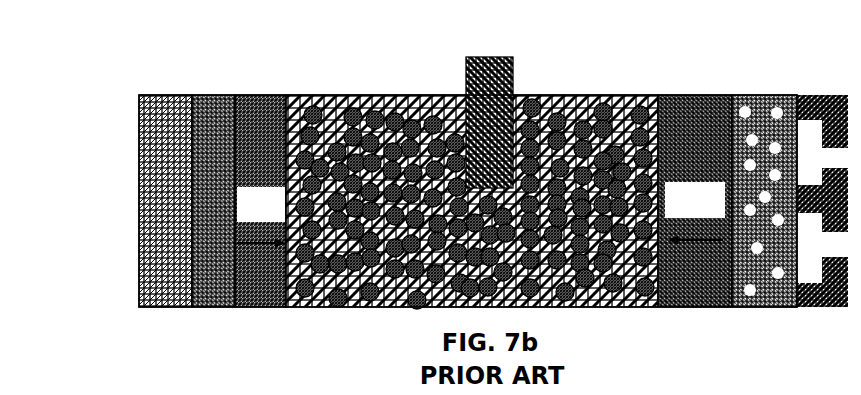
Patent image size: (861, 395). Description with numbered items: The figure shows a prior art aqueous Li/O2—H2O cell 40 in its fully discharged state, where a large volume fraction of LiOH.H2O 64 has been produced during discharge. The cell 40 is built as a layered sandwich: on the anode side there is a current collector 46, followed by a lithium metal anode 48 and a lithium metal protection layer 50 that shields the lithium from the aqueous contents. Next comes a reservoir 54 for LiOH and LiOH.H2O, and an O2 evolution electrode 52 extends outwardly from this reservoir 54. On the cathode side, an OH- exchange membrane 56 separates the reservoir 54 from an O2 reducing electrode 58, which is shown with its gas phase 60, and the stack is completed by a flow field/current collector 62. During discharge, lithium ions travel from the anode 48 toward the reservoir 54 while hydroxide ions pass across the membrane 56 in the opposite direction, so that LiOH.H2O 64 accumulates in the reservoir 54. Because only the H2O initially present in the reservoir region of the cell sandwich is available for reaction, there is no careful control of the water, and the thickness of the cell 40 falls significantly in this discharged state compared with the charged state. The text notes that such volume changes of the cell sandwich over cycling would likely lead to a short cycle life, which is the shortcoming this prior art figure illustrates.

The aqueous Li/O2—H2O cell 40 is at (339, 31).
The current collector 46 is at (145, 95).
The lithium metal anode 48 is at (212, 95).
The lithium metal protection layer 50 is at (273, 95).
The O2 evolution electrode 52 is at (465, 57).
The reservoir 54 is at (415, 95).
The OH- exchange membrane 56 is at (685, 95).
The O2 reducing electrode 58 is at (785, 95).
The gas phase 60 is at (747, 112).
The flow field/current collector 62 is at (837, 95).
The LiOH.H2O 64 is at (338, 307).